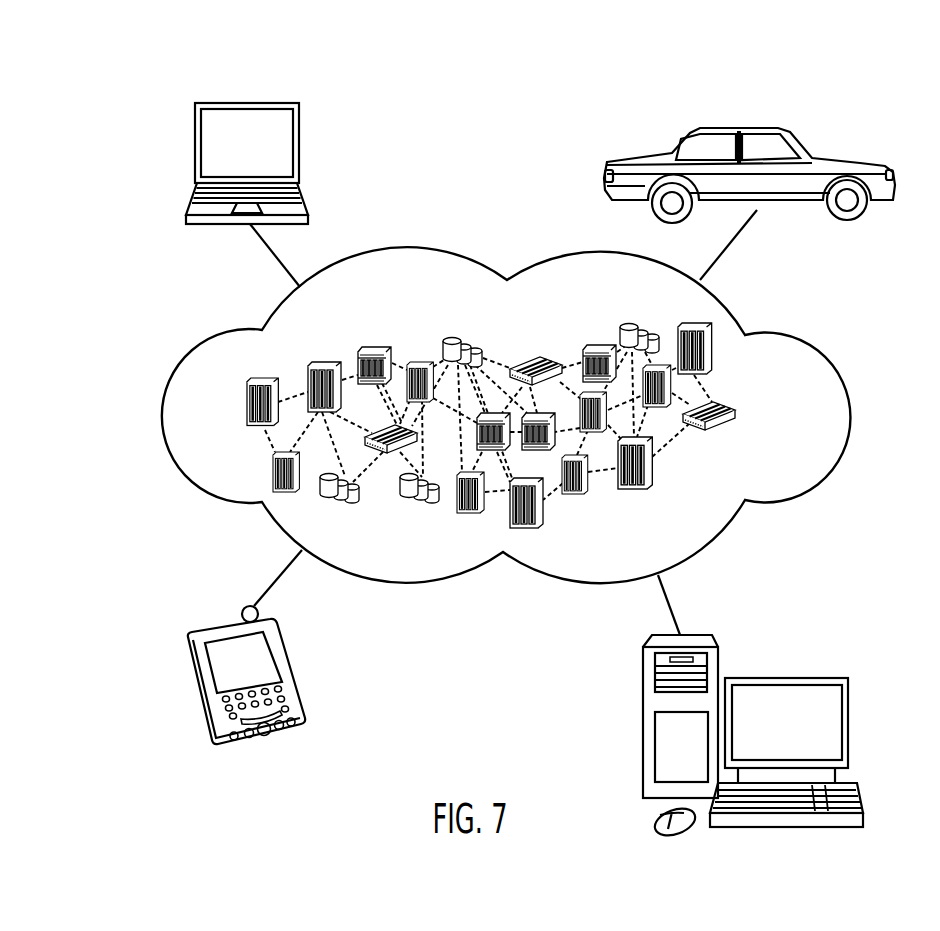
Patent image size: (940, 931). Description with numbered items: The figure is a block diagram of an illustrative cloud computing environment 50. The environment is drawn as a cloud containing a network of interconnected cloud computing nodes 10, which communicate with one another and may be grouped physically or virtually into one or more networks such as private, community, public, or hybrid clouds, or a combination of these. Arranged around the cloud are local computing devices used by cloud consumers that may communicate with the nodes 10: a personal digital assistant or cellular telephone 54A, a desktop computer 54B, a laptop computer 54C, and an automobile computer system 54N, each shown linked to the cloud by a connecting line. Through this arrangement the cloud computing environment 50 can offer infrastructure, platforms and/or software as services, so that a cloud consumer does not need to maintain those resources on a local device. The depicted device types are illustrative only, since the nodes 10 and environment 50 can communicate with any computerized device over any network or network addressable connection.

The cloud computing node 10 is at (741, 415).
The cloud computing environment 50 is at (798, 333).
The personal digital assistant or cellular telephone 54A is at (230, 622).
The desktop computer 54B is at (787, 677).
The laptop computer 54C is at (247, 103).
The automobile computer system 54N is at (732, 127).